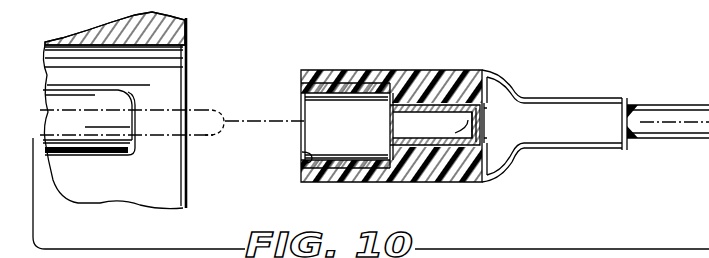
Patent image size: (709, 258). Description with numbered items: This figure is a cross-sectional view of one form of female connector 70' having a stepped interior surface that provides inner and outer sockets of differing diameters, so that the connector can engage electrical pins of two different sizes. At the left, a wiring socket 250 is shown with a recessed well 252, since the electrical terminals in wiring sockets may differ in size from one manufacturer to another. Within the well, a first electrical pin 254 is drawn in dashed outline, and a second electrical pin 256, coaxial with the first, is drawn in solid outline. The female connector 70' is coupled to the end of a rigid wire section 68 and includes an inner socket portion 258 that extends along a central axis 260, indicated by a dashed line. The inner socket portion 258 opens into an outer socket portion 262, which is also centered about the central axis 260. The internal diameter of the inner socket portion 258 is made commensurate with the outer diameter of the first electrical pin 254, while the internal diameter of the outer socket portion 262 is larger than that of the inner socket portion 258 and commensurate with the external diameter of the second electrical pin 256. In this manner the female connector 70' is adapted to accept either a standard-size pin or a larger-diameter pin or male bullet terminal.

The wiring socket 250 is at (188, 24).
The recessed well 252 is at (176, 58).
The first electrical pin 254 is at (231, 88).
The second electrical pin 256 is at (134, 152).
The inner socket portion 258 is at (486, 131).
The central axis 260 is at (240, 127).
The outer socket portion 262 is at (302, 158).
The female connector 70' is at (464, 105).
The rigid wire section 68 is at (667, 118).